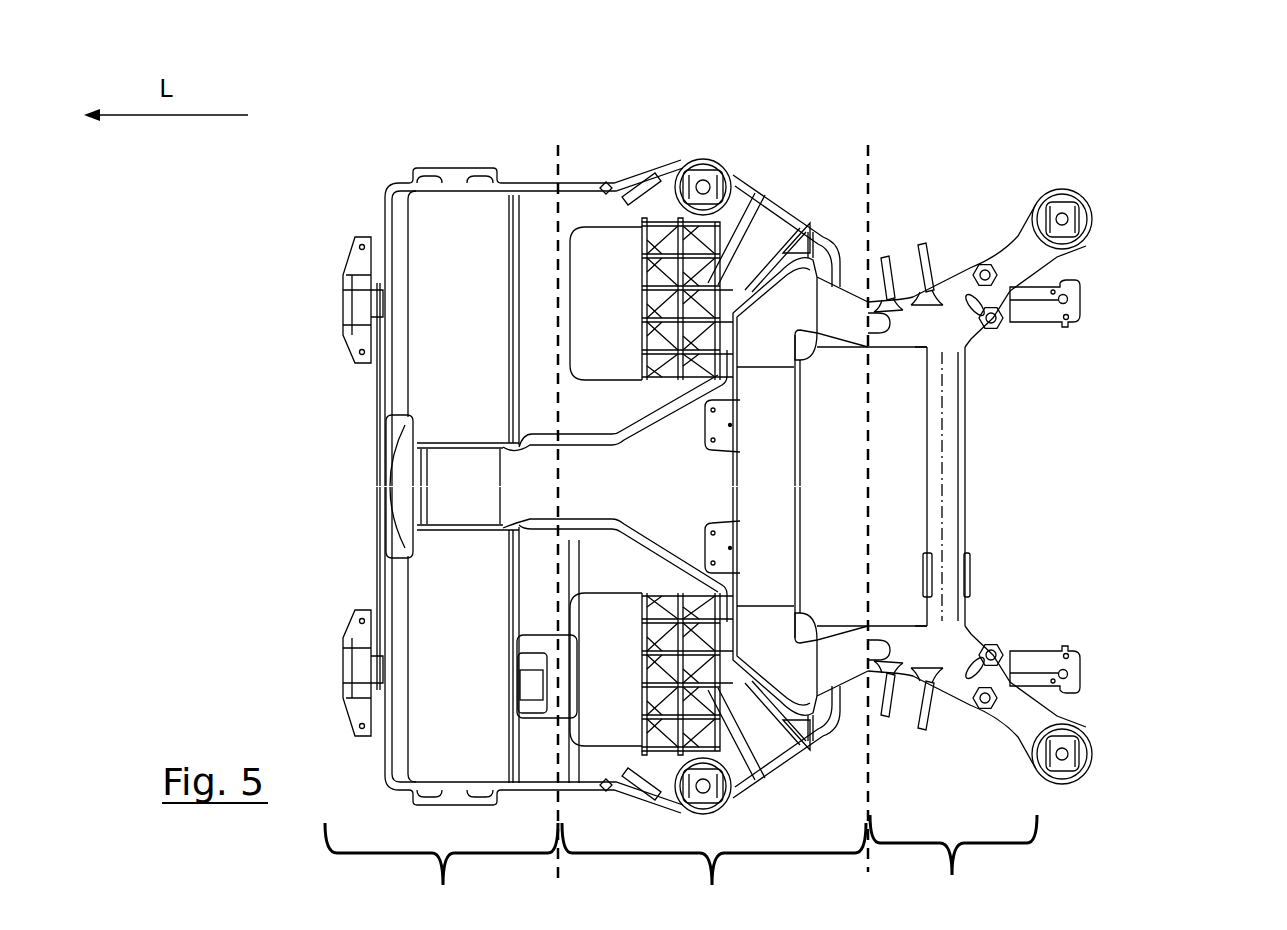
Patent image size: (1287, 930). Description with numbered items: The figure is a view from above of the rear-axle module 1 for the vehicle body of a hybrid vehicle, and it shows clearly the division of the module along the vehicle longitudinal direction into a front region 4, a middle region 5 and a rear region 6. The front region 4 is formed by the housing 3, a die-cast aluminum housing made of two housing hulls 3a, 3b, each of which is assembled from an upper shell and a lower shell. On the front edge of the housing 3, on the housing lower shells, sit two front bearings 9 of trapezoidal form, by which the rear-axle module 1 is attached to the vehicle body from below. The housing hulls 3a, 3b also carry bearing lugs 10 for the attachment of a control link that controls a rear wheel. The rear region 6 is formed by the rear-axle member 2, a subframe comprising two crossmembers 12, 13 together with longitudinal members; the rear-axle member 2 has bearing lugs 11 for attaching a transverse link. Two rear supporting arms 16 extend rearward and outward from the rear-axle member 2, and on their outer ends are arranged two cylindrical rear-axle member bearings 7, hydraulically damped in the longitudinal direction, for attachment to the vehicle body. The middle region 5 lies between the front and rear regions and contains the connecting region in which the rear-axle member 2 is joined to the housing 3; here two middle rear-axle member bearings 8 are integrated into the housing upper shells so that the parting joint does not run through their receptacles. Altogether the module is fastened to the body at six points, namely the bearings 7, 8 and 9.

The rear-axle module 1 is at (334, 136).
The rear-axle member 2 is at (1049, 443).
The housing 3 is at (543, 486).
The housing hull 3a is at (480, 319).
The housing hull 3b is at (476, 679).
The front region 4 is at (441, 872).
The middle region 5 is at (714, 872).
The rear region 6 is at (953, 865).
The rear-axle member bearings 7 is at (1092, 246).
The middle rear-axle member bearings 8 is at (720, 165).
The front bearings 9 is at (355, 296).
The bearing lugs 10 is at (766, 233).
The bearing lugs 11 is at (906, 268).
The crossmember 12 is at (958, 477).
The crossmember 13 is at (778, 490).
The rear supporting arms 16 is at (1027, 703).